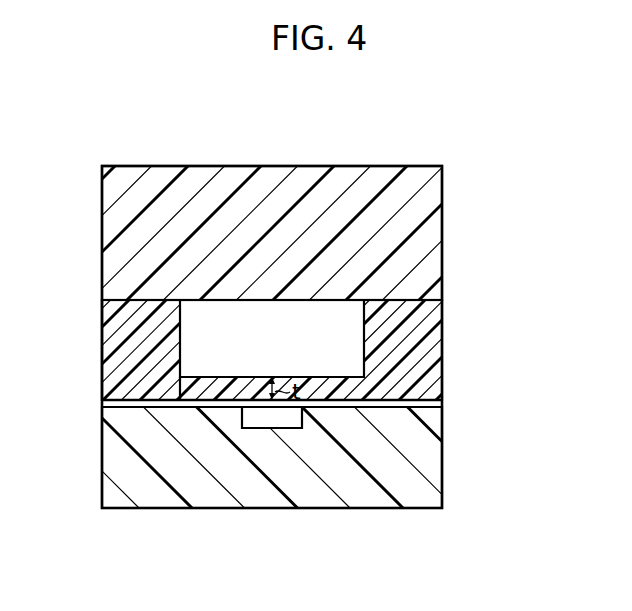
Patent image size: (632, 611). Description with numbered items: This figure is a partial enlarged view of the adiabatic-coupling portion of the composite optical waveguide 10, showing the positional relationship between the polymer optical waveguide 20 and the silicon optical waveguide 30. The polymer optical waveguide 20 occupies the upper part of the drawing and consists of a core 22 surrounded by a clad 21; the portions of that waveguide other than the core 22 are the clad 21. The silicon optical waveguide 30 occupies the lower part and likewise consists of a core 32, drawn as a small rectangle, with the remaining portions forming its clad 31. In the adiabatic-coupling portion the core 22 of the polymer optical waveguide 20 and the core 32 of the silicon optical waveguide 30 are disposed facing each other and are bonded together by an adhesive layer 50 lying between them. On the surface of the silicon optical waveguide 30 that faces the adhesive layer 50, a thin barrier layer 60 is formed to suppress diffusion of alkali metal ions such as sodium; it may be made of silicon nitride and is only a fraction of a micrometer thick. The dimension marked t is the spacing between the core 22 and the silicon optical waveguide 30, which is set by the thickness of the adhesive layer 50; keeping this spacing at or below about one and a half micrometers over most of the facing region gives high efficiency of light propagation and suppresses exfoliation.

The composite optical waveguide 10 is at (277, 354).
The polymer optical waveguide 20 is at (277, 283).
The clad 21 is at (423, 235).
The core 22 is at (274, 350).
The silicon optical waveguide 30 is at (273, 507).
The clad 31 is at (358, 492).
The core 32 is at (275, 418).
The adhesive layer 50 is at (120, 353).
The barrier layer 60 is at (110, 402).